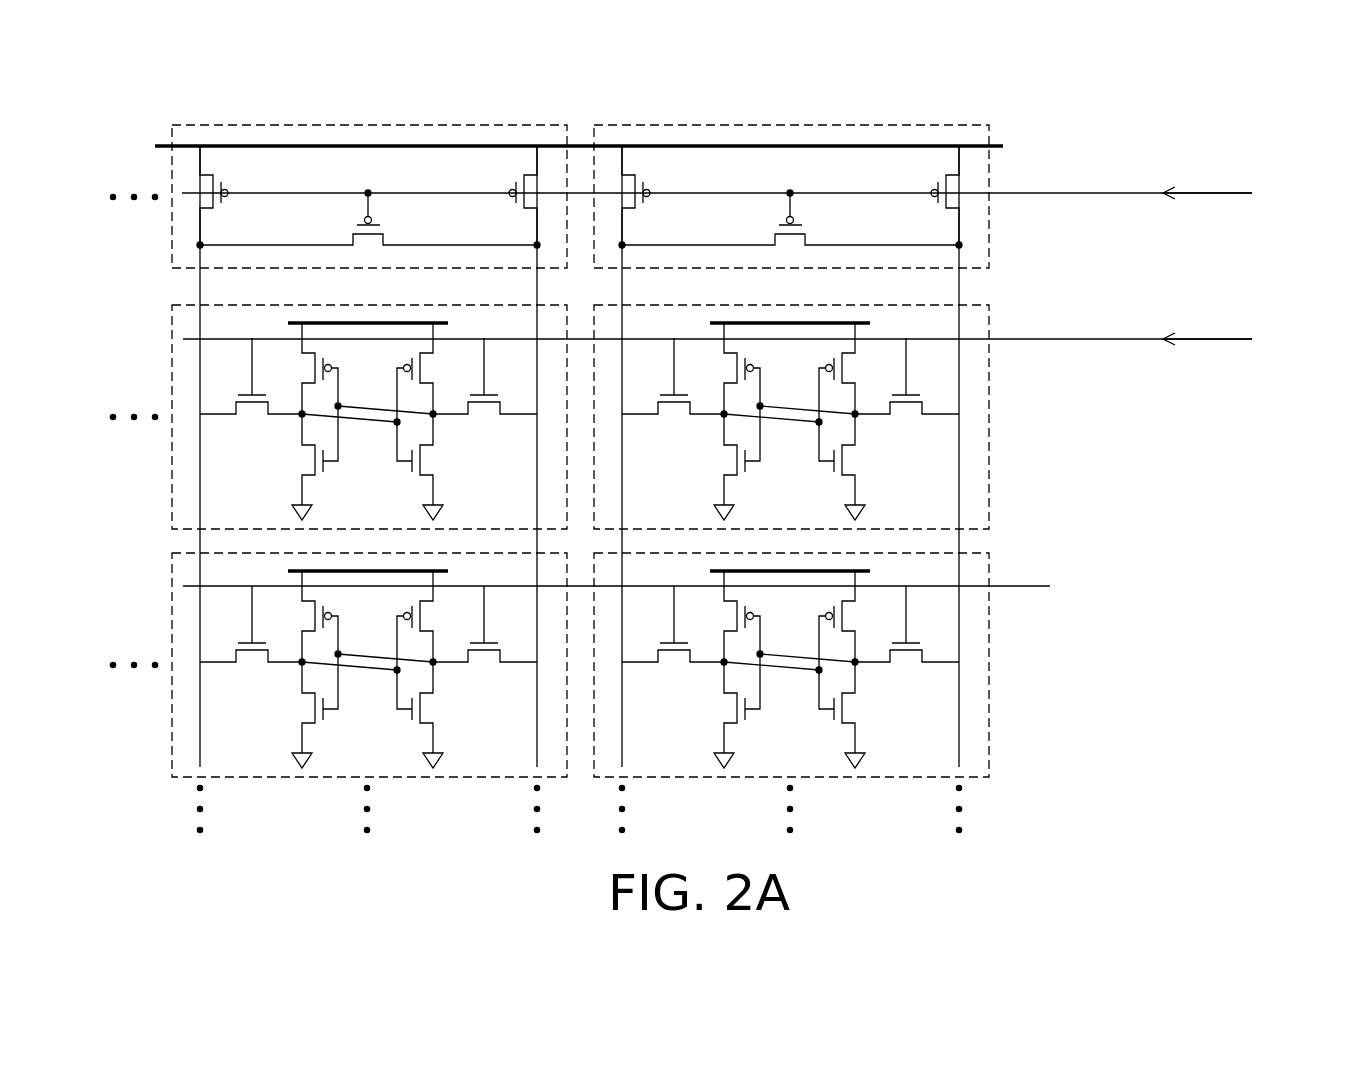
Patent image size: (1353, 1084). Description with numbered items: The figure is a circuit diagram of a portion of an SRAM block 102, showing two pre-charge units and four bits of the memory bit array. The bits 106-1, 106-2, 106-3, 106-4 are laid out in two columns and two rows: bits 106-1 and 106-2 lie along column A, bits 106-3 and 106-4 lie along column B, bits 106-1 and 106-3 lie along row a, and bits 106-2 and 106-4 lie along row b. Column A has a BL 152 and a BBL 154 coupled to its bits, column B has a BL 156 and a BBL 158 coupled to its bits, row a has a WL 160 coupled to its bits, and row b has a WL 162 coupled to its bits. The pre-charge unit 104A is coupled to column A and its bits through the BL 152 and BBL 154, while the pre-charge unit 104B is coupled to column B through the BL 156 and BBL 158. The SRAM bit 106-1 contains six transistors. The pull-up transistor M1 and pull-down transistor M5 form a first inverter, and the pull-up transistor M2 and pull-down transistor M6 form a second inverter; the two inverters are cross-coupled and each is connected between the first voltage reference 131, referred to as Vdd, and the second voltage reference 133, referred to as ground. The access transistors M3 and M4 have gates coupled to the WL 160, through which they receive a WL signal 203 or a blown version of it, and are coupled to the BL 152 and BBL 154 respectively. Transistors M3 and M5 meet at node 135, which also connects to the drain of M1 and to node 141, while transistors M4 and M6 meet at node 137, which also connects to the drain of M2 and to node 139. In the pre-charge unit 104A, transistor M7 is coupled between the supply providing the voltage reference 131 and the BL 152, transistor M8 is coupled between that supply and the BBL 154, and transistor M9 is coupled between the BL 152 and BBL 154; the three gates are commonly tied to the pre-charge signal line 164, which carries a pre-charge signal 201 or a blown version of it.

The SRAM block 102 is at (1320, 138).
The first voltage reference 131 is at (783, 300).
The pre-charge unit 104A is at (843, 196).
The pre-charge unit 104B is at (170, 243).
The SRAM bit 106-1 is at (843, 417).
The SRAM bit 106-2 is at (990, 715).
The SRAM bit 106-3 is at (170, 467).
The SRAM bit 106-4 is at (170, 715).
The BL 152 is at (624, 285).
The BBL 154 is at (957, 285).
The BL 156 is at (202, 285).
The BBL 158 is at (535, 285).
The WL 160 is at (1020, 339).
The WL 162 is at (1020, 586).
The pre-charge signal line 164 is at (1020, 193).
The pre-charge signal 201 is at (1226, 176).
The WL signal 203 is at (1226, 322).
The second voltage reference 133 is at (765, 510).
The node 135 is at (689, 440).
The node 137 is at (891, 440).
The node 139 is at (806, 389).
The node 141 is at (773, 441).
The pull-up transistor M1 is at (721, 368).
The pull-up transistor M2 is at (860, 372).
The access transistor M3 is at (673, 376).
The access transistor M4 is at (907, 376).
The pull-down transistor M5 is at (752, 466).
The pull-down transistor M6 is at (829, 470).
The transistor M7 is at (661, 195).
The transistor M8 is at (921, 195).
The transistor M9 is at (790, 219).
The row a is at (151, 368).
The row b is at (153, 618).
The column A is at (876, 788).
The column B is at (453, 791).